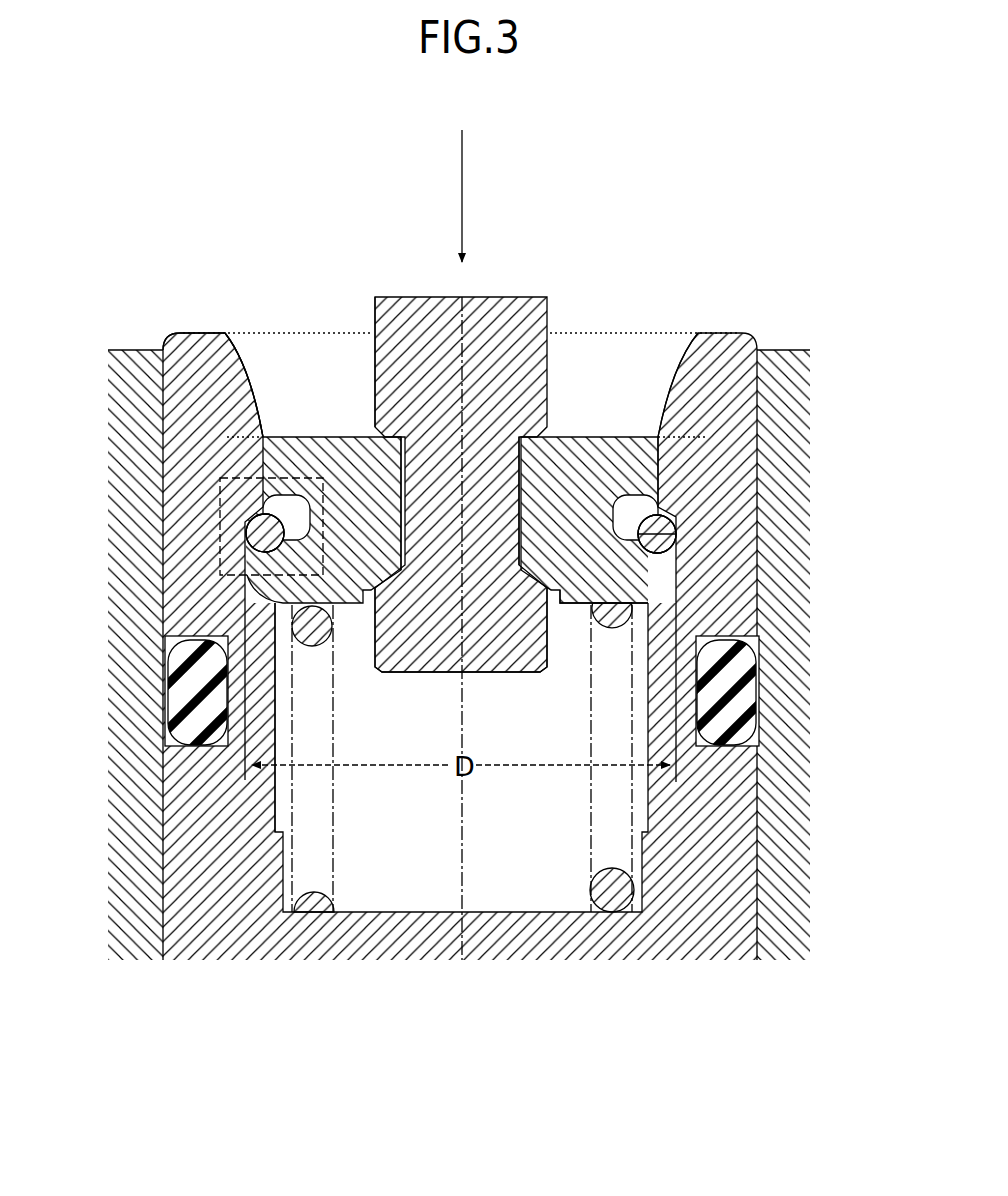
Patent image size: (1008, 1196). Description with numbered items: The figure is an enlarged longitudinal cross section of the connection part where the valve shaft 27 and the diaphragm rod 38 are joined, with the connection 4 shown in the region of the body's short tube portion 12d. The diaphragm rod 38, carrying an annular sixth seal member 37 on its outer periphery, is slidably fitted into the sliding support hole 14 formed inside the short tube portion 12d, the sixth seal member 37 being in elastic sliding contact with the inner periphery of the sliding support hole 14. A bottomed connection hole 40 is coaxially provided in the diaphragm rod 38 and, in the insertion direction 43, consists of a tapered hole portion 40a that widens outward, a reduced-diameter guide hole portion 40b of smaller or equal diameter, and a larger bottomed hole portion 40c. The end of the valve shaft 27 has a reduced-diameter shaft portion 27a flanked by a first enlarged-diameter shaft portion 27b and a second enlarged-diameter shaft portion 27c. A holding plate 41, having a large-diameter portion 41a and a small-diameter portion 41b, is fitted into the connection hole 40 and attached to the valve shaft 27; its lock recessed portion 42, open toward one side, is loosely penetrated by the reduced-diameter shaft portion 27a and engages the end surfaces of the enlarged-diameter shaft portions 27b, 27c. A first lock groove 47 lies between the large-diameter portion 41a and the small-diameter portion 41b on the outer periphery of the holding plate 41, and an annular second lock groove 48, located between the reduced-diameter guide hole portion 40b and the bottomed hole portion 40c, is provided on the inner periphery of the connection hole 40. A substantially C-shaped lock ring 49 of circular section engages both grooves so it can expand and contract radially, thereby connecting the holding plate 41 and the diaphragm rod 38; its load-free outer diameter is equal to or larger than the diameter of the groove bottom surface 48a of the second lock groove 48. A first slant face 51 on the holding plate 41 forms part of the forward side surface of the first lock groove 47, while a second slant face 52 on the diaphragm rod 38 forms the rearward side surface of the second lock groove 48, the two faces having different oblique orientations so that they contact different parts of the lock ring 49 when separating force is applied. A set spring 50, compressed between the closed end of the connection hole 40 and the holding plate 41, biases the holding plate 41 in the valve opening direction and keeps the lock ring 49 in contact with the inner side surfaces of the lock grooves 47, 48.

The brake unit 4 is at (237, 468).
The short tube portion 12d is at (133, 350).
The sliding support hole 14 is at (165, 908).
The valve shaft 27 is at (551, 356).
The reduced-diameter shaft portion 27a is at (518, 512).
The first enlarged-diameter shaft portion 27b is at (375, 358).
The second enlarged-diameter shaft portion 27c is at (498, 673).
The sixth seal member 37 is at (178, 697).
The diaphragm rod 38 is at (733, 862).
The connection hole 40 is at (640, 802).
The tapered hole portion 40a is at (673, 378).
The reduced-diameter guide hole portion 40b is at (263, 467).
The bottomed hole portion 40c is at (277, 787).
The holding plate 41 is at (327, 435).
The large-diameter portion 41a is at (677, 462).
The small-diameter portion 41b is at (640, 590).
The lock recessed portion 42 is at (420, 500).
The insertion direction 43 is at (466, 195).
The first lock groove 47 is at (674, 545).
The second lock groove 48 is at (303, 600).
The groove bottom surface 48a is at (256, 540).
The lock ring 49 is at (667, 520).
The set spring 50 is at (313, 913).
The first slant face 51 is at (662, 542).
The second slant face 52 is at (293, 538).